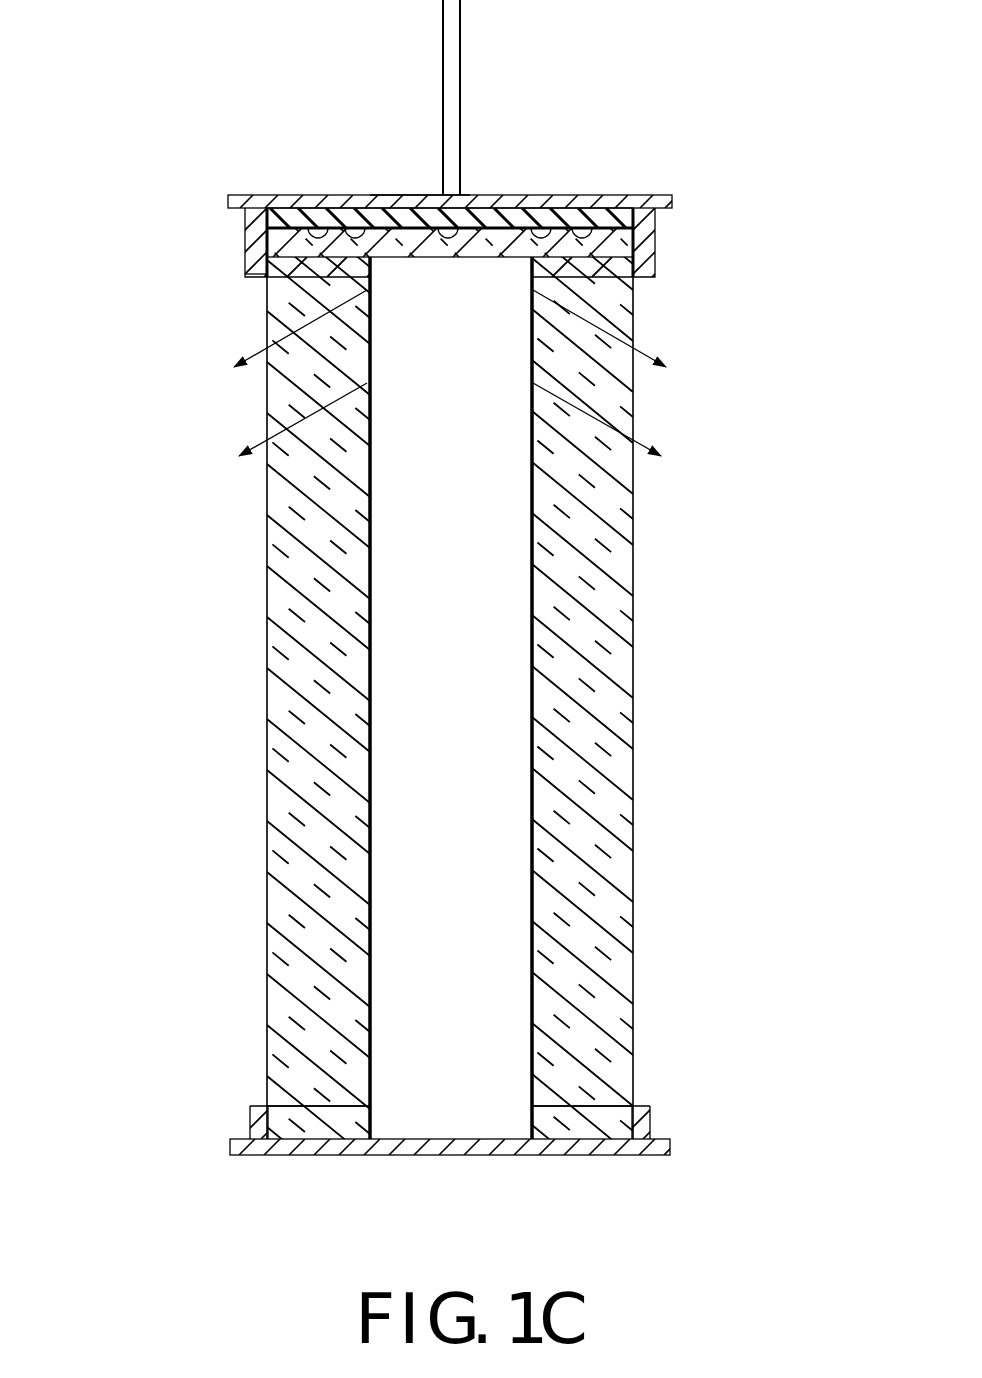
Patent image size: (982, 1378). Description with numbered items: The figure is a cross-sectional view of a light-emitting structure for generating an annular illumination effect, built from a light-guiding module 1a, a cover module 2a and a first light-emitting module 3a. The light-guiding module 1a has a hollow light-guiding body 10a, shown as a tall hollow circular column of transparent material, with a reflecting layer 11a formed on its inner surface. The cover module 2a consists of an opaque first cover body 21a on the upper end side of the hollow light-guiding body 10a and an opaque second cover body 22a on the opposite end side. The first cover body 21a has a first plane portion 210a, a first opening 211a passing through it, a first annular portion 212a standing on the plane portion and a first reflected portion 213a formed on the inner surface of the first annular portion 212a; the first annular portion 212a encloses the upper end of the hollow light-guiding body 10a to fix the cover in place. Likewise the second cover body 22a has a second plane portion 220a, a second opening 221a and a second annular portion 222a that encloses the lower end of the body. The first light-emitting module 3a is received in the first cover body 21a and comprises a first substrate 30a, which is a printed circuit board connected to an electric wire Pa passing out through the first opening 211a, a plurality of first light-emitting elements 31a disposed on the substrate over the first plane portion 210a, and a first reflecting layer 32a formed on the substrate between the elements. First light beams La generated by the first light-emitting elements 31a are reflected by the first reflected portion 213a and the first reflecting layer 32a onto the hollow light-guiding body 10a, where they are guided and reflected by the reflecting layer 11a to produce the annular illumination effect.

The electric wire Pa is at (438, 33).
The light-guiding module 1a is at (531, 670).
The hollow light-guiding body 10a is at (620, 645).
The reflecting layer 11a is at (535, 732).
The cover module 2a is at (444, 657).
The first cover body 21a is at (369, 228).
The first plane portion 210a is at (318, 199).
The first opening 211a is at (394, 198).
The first annular portion 212a is at (248, 243).
The first reflected portion 213a is at (188, 306).
The second cover body 22a is at (542, 1141).
The second plane portion 220a is at (605, 1158).
The second opening 221a is at (523, 1157).
The second annular portion 222a is at (647, 1120).
The first light-emitting module 3a is at (532, 204).
The first substrate 30a is at (626, 195).
The first light-emitting elements 31a is at (497, 251).
The first reflecting layer 32a is at (640, 230).
The first light beams La is at (452, 394).